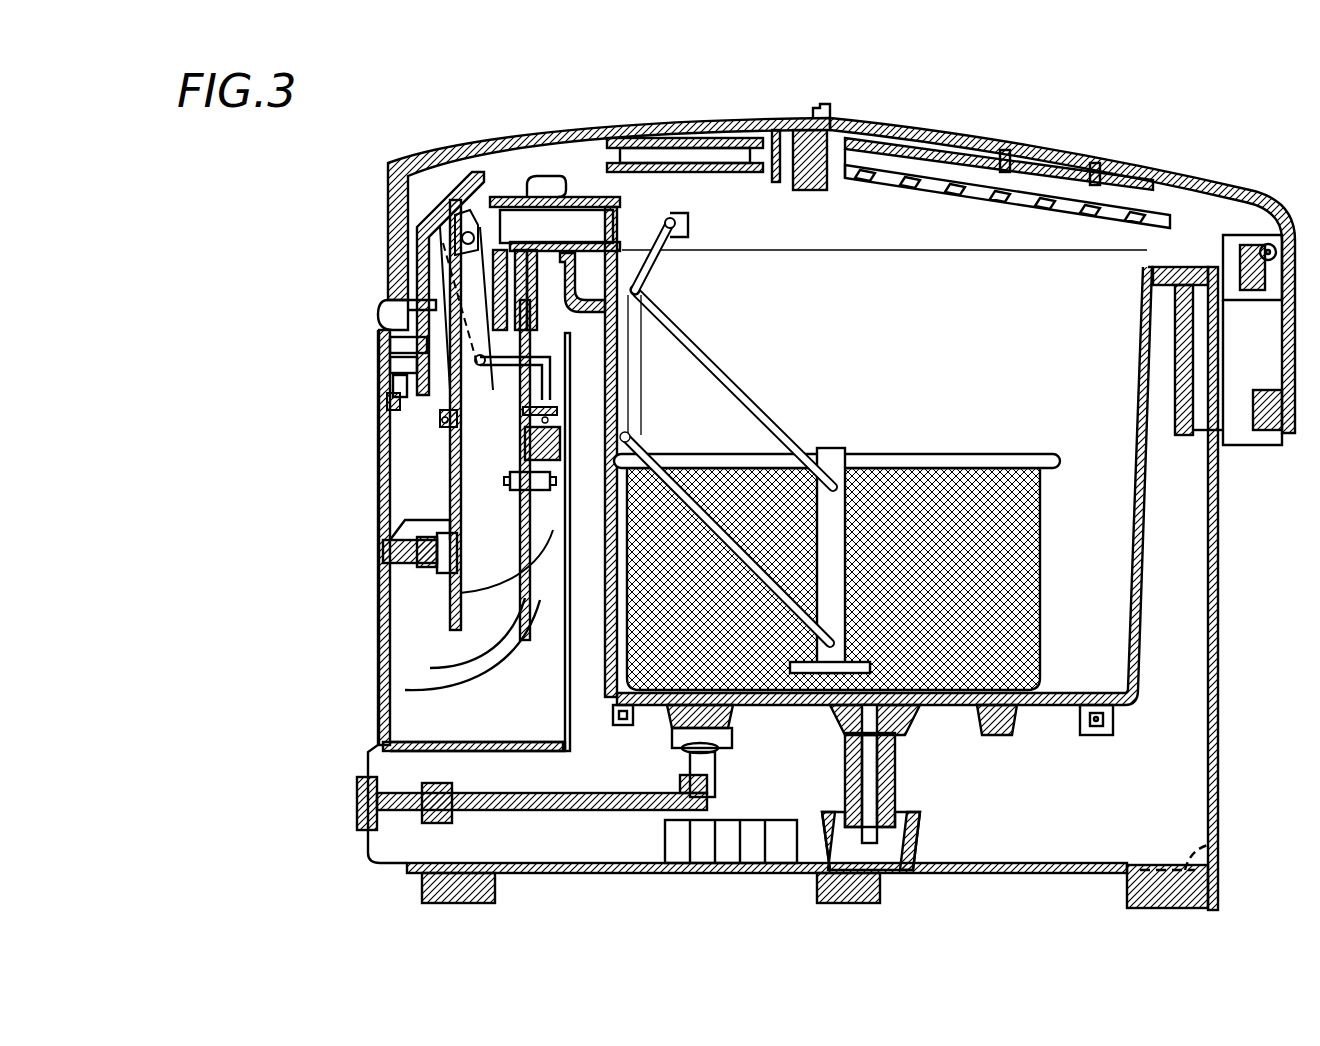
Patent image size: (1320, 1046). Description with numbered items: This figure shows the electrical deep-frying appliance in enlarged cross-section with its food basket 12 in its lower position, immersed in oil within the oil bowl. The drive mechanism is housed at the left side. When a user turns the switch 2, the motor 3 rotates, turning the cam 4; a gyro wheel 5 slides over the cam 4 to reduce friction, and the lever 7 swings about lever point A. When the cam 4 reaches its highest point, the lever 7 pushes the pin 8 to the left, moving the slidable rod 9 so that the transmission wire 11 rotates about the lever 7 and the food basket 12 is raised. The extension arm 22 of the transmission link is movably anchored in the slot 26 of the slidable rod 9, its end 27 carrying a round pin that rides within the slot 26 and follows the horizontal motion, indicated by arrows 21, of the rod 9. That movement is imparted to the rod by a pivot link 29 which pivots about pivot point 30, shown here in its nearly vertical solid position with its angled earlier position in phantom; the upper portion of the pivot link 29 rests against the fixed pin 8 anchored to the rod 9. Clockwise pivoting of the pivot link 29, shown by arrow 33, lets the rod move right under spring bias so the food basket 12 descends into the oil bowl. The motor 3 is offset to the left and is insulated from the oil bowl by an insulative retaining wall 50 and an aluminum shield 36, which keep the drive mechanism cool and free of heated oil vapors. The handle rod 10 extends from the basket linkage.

The switch 2 is at (553, 530).
The motor 3 is at (507, 462).
The cam 4 is at (505, 437).
The gyro wheel 5 is at (543, 388).
The lever 7 is at (480, 293).
The pin 8 is at (460, 227).
The slidable rod 9 is at (533, 230).
The basket handle rod 10 is at (632, 337).
The transmission wire 11 is at (770, 417).
The food basket 12 is at (940, 570).
The arrows 21 is at (437, 148).
The extension arm 22 is at (660, 260).
The slot 26 is at (675, 205).
The end 27 is at (692, 227).
The pivot link 29 is at (443, 243).
The pivot point 30 is at (432, 380).
The arrow 33 is at (500, 315).
The aluminum shield 36 is at (567, 740).
The insulative retaining wall 50 is at (467, 687).
The lever point A is at (447, 345).